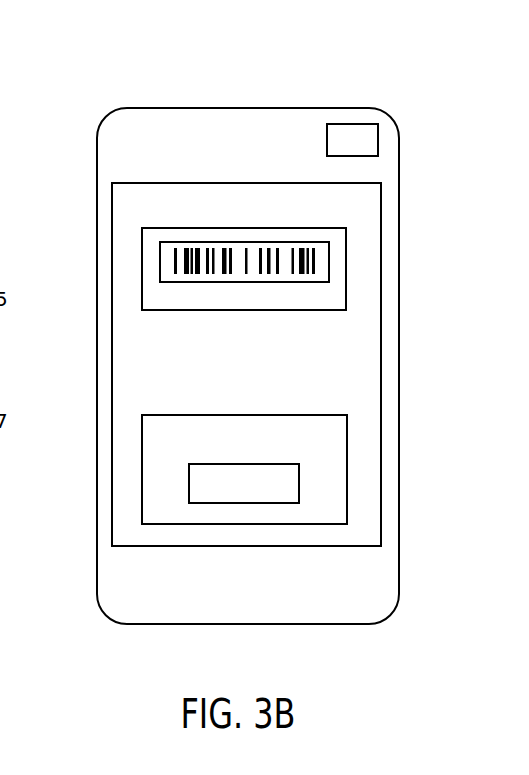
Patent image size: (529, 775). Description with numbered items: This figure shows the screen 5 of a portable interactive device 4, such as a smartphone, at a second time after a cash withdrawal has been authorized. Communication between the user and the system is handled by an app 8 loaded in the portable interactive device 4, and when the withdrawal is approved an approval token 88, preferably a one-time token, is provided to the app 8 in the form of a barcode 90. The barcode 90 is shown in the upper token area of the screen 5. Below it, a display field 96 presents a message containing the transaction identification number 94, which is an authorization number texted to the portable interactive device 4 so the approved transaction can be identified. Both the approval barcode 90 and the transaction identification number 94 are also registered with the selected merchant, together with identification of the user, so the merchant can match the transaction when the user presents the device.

The portable interactive device 4 is at (243, 98).
The screen 5 is at (97, 223).
The app 8 is at (345, 124).
The approval token 88 is at (346, 298).
The barcode 90 is at (329, 251).
The transaction identification number 94 is at (189, 490).
The display field 96 is at (142, 443).